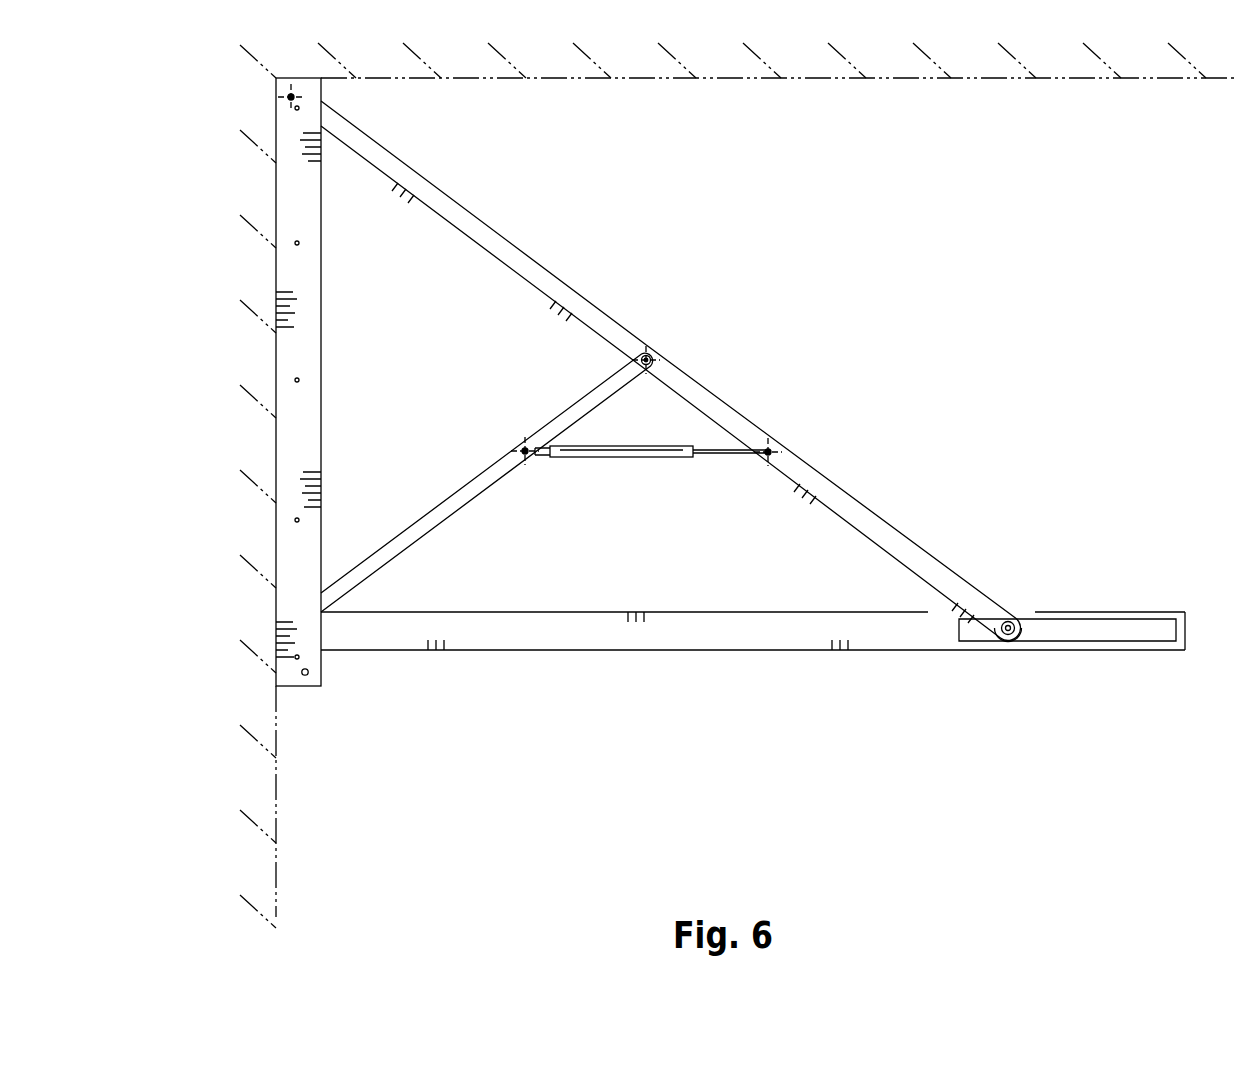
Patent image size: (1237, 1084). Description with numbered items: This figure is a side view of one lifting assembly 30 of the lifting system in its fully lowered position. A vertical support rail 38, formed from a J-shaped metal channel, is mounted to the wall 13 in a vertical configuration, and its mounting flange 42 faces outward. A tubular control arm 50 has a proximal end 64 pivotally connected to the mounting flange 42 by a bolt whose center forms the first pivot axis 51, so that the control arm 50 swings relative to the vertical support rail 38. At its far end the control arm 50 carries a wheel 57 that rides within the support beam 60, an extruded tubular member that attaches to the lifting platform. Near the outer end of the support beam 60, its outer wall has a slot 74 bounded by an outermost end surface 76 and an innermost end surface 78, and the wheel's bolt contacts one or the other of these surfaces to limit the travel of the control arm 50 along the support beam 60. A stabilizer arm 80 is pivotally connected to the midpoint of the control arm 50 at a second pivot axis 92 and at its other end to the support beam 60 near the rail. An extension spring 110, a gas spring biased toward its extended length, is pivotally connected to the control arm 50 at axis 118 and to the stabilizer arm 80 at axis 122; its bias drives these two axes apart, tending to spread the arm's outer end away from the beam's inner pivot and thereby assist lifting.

The wall 13 is at (276, 787).
The left lifting assembly 30 is at (830, 351).
The vertical support rail 38 is at (324, 355).
The mounting flange 42 is at (322, 291).
The control arm 50 is at (848, 498).
The first pivot axis 51 is at (288, 97).
The wheel 57 is at (1016, 624).
The support beam 60 is at (660, 633).
The proximal end 64 is at (368, 128).
The slot 74 is at (1078, 634).
The outermost end surface 76 is at (1166, 641).
The innermost end surface 78 is at (980, 651).
The stabilizer arm 80 is at (465, 498).
The second pivot axis 92 is at (652, 346).
The extension spring 110 is at (640, 458).
The axis 118 is at (782, 440).
The axis 122 is at (535, 466).